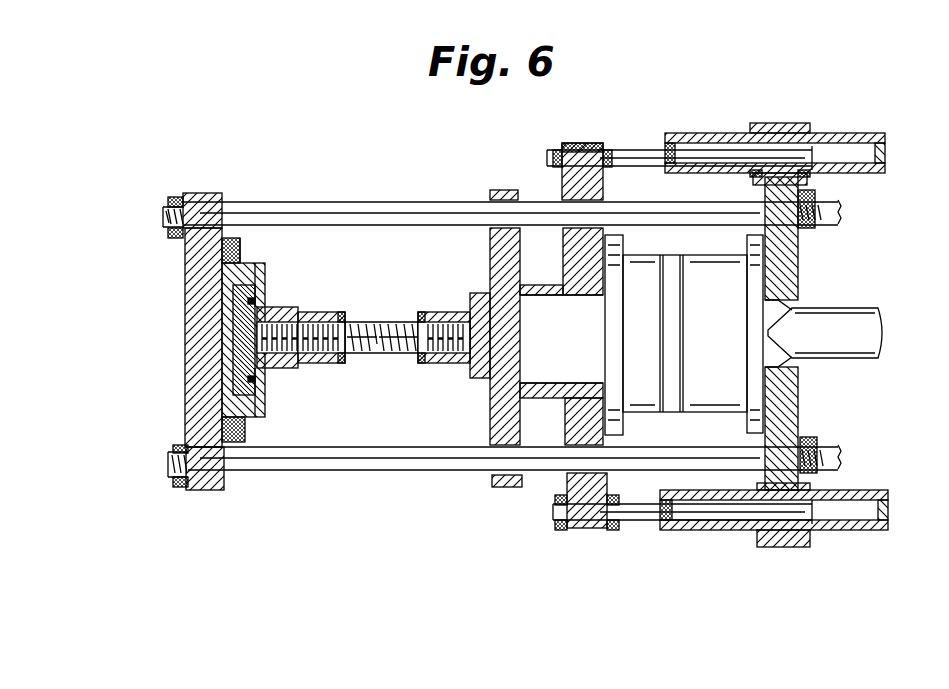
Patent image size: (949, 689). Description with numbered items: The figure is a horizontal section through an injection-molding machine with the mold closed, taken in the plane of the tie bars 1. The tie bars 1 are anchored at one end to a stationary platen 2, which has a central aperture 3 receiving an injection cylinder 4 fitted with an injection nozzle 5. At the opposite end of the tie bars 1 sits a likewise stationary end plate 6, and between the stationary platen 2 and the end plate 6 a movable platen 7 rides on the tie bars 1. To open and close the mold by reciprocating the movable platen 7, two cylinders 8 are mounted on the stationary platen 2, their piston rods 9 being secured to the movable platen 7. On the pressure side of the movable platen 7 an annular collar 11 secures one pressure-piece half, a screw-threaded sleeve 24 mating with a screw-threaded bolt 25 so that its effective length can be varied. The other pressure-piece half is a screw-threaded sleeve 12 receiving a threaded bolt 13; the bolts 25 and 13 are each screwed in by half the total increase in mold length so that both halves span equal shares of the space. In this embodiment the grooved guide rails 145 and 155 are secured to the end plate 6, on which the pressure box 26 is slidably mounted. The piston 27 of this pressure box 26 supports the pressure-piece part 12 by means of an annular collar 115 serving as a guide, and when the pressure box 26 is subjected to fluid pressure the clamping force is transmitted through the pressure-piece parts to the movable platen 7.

The tie bars 1 is at (283, 215).
The stationary platen 2 is at (790, 248).
The central aperture 3 is at (790, 290).
The injection cylinder 4 is at (878, 318).
The injection nozzle 5 is at (780, 345).
The end plate 6 is at (210, 200).
The movable platen 7 is at (505, 192).
The cylinders 8 is at (797, 130).
The piston rods 9 is at (653, 158).
The annular collar 11 is at (482, 232).
The screw-threaded sleeve 12 is at (318, 310).
The threaded bolt 13 is at (358, 325).
The sleeve 24 is at (437, 318).
The screw-threaded bolt 25 is at (393, 325).
The pressure box 26 is at (230, 298).
The piston 27 is at (237, 323).
The annular collar 115 is at (283, 372).
The grooved guide rail 145 is at (232, 250).
The grooved guide rail 155 is at (222, 432).